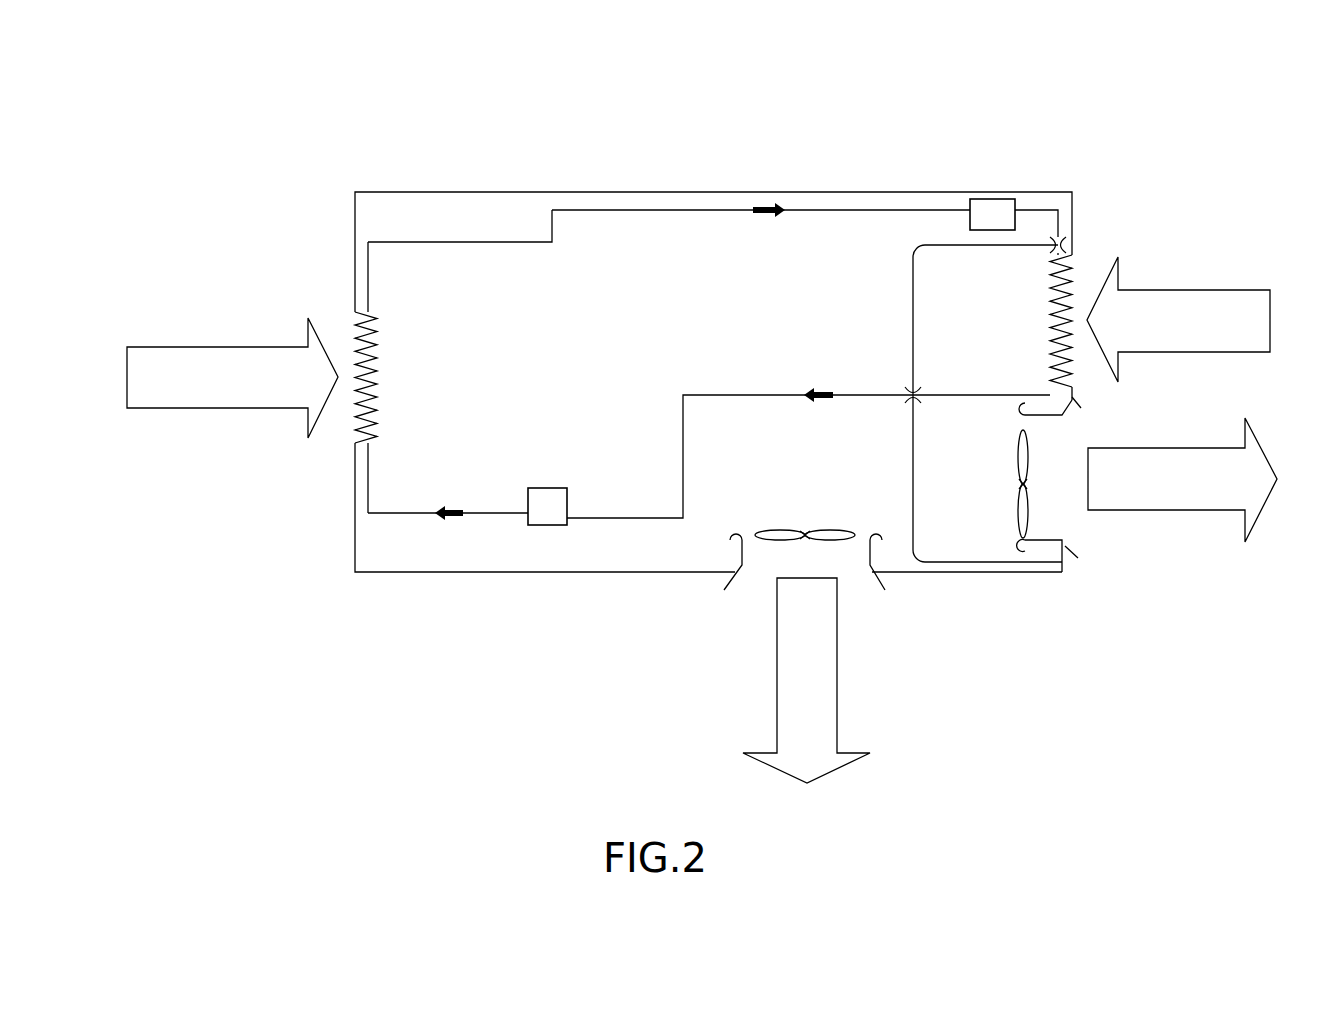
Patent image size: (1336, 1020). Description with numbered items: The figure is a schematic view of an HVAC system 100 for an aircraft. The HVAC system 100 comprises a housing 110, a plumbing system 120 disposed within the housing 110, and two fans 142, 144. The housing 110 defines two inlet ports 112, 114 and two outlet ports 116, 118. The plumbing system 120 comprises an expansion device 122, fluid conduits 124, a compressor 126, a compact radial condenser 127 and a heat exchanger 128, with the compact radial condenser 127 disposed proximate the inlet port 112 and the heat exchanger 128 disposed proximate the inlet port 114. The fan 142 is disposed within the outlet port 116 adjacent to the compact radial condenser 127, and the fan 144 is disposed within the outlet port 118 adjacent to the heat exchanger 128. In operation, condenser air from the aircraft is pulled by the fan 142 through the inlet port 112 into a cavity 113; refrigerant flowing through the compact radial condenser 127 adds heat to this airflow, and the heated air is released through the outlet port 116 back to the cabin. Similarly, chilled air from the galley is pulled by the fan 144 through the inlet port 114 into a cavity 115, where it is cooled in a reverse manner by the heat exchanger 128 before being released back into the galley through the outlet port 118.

The HVAC system 100 is at (292, 163).
The housing 110 is at (372, 191).
The inlet port 112 is at (341, 337).
The cavity 113 is at (708, 313).
The inlet port 114 is at (1080, 312).
The cavity 115 is at (987, 403).
The outlet port 116 is at (765, 588).
The outlet port 118 is at (1047, 496).
The plumbing system 120 is at (663, 193).
The expansion device 122 is at (995, 203).
The fluid conduits 124 is at (885, 211).
The compressor 126 is at (538, 500).
The compact radial condenser 127 is at (360, 325).
The heat exchanger 128 is at (1063, 290).
The fan 142 is at (826, 541).
The fan 144 is at (1022, 538).